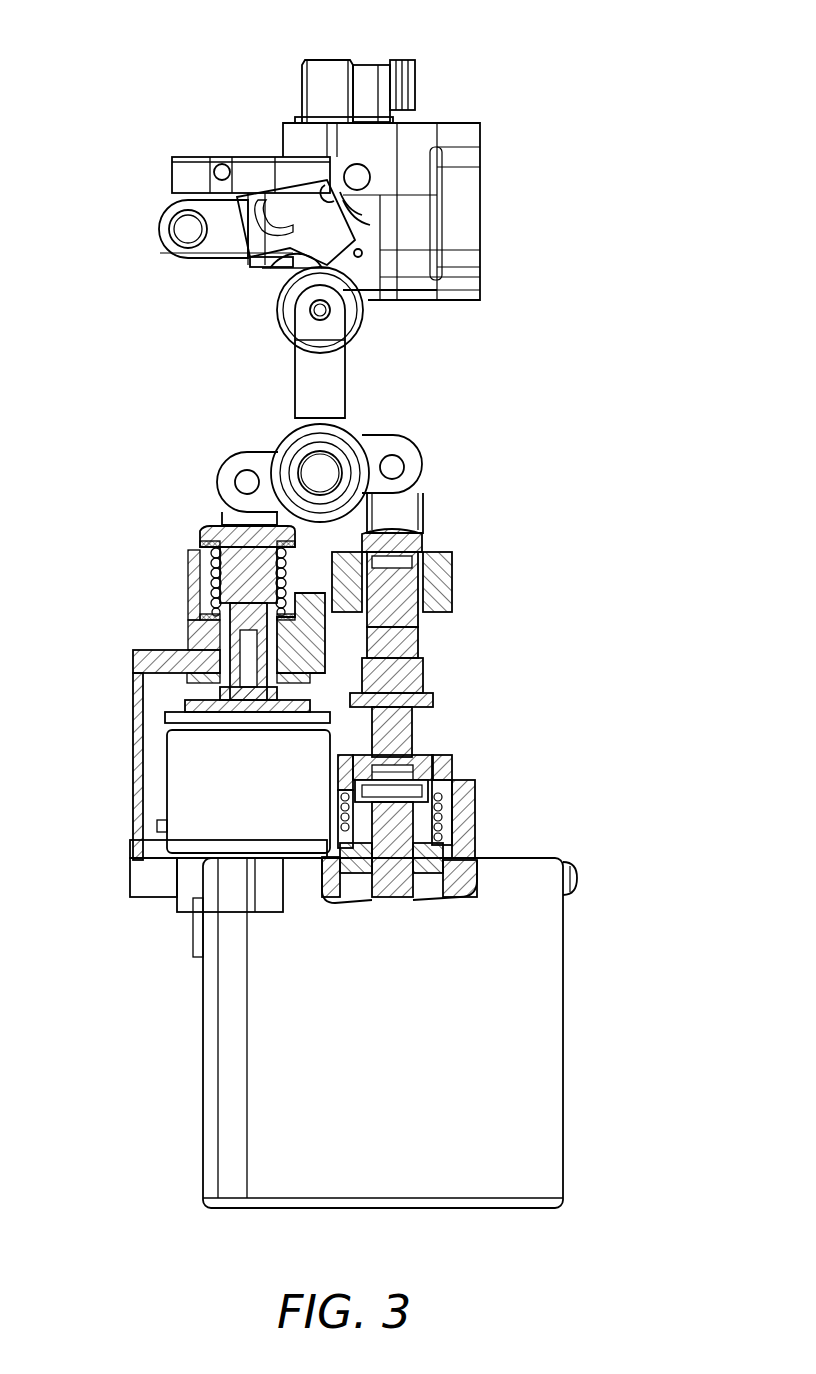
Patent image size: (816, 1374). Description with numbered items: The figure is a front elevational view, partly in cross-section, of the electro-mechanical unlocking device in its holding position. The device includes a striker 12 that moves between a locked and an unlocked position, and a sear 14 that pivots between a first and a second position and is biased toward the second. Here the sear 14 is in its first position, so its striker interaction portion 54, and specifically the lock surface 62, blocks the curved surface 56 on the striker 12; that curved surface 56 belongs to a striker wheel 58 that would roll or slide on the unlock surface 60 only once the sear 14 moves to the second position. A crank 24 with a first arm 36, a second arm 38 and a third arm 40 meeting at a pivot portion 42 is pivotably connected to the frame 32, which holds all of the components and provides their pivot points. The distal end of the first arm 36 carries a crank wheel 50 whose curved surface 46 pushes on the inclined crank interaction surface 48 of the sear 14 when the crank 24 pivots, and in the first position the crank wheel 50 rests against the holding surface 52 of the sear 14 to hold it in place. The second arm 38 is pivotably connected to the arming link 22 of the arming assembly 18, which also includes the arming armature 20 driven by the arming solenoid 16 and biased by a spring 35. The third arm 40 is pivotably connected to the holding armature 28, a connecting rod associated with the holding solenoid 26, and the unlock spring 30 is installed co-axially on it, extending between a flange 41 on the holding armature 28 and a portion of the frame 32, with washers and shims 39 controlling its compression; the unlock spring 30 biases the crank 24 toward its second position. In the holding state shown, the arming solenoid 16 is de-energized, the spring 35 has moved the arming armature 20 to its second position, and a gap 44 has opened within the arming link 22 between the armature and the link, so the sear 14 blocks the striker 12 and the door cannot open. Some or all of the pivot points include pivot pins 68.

The striker 12 is at (428, 135).
The sear 14 is at (225, 242).
The arming solenoid 16 is at (517, 966).
The arming assembly 18 is at (472, 645).
The arming armature 20 is at (461, 702).
The arming link 22 is at (452, 592).
The crank 24 is at (332, 378).
The holding solenoid 26 is at (202, 773).
The holding armature 28 is at (217, 650).
The unlock spring 30 is at (213, 580).
The frame 32 is at (145, 660).
The spring 35 is at (440, 828).
The first arm 36 is at (332, 352).
The second arm 38 is at (407, 479).
The washers and shims 39 is at (200, 545).
The third arm 40 is at (233, 495).
The flange 41 is at (210, 537).
The pivot portion 42 is at (268, 431).
The gap 44 is at (422, 560).
The curved surface 46 is at (283, 262).
The crank interaction surface 48 is at (362, 256).
The crank wheel 50 is at (350, 310).
The holding surface 52 is at (283, 260).
The striker interaction portion 54 is at (332, 188).
The curved surface 56 is at (337, 175).
The striker wheel 58 is at (348, 198).
The unlock surface 60 is at (350, 210).
The lock surface 62 is at (330, 165).
The pivot pins 68 is at (372, 80).